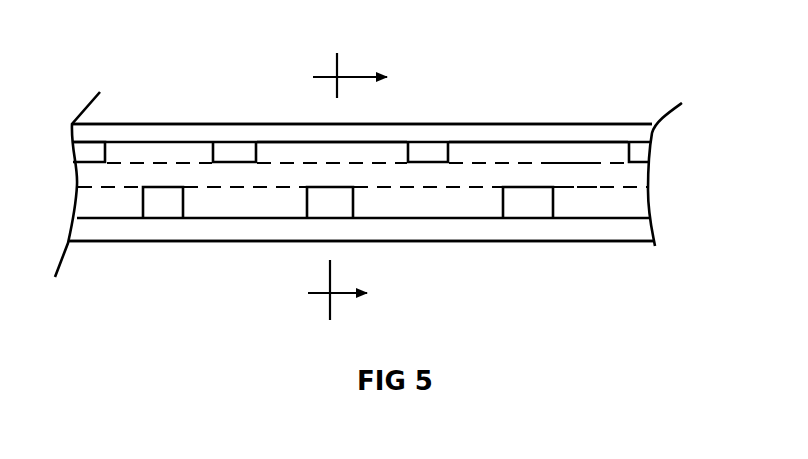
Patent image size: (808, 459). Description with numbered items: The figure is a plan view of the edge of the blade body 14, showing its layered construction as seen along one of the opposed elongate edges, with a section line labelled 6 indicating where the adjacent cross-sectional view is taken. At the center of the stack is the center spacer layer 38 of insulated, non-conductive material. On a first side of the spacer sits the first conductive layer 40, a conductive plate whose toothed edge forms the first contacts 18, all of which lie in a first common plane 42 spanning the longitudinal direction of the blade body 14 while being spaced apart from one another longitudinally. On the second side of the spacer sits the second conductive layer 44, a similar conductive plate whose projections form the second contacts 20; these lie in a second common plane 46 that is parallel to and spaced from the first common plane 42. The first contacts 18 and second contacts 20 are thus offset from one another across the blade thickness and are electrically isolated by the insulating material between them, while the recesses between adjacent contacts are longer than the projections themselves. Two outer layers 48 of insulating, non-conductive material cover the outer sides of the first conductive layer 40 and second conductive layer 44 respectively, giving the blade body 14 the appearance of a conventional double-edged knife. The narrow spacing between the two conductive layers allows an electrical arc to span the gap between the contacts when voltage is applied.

The blade body 14 is at (152, 268).
The first contacts 18 is at (233, 148).
The second contacts 20 is at (335, 192).
The center spacer layer 38 is at (604, 166).
The first conductive layer 40 is at (560, 150).
The first common plane 42 is at (507, 153).
The second conductive layer 44 is at (610, 193).
The second common plane 46 is at (472, 175).
The outer layers 48 is at (147, 131).
The section line 6- 6 is at (331, 186).